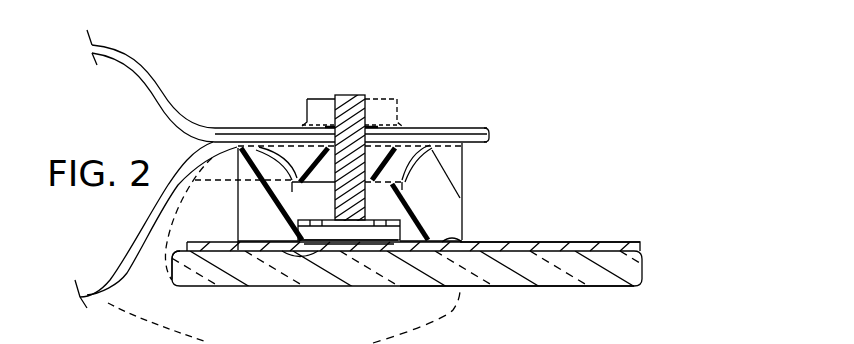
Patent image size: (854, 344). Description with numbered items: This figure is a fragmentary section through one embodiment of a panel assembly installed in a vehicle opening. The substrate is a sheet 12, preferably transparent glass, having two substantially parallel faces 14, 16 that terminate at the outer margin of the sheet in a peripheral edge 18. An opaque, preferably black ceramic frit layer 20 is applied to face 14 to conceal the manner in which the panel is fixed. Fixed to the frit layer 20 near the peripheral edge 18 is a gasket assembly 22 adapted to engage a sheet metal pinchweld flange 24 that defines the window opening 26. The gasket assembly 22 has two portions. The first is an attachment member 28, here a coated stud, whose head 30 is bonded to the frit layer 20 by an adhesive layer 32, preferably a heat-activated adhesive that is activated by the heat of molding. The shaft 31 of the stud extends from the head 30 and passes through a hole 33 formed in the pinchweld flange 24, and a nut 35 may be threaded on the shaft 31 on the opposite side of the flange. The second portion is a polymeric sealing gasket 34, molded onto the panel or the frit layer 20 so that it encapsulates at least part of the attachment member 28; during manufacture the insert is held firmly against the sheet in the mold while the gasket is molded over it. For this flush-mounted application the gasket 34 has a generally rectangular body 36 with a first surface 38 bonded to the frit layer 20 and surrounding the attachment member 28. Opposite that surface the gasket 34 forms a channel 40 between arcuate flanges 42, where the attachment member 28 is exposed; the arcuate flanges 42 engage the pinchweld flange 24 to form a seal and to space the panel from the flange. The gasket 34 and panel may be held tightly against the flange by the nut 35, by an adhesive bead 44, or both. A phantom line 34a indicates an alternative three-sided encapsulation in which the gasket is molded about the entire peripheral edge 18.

The sheet 12 is at (632, 243).
The face 14 is at (615, 242).
The face 16 is at (600, 287).
The peripheral edge 18 is at (172, 282).
The ceramic frit layer 20 is at (573, 241).
The gasket assembly 22 is at (488, 206).
The pinchweld flange 24 is at (458, 131).
The window opening 26 is at (489, 130).
The attachment member 28 is at (372, 194).
The head 30 is at (345, 224).
The shaft 31 is at (352, 96).
The adhesive layer 32 is at (224, 250).
The hole 33 is at (320, 99).
The sealing gasket 34 is at (480, 178).
The phantom line 34a is at (458, 312).
The nut 35 is at (381, 100).
The rectangular body 36 is at (325, 209).
The first surface 38 is at (463, 246).
The channel 40 is at (290, 175).
The arcuate flanges 42 is at (237, 148).
The adhesive bead 44 is at (405, 158).